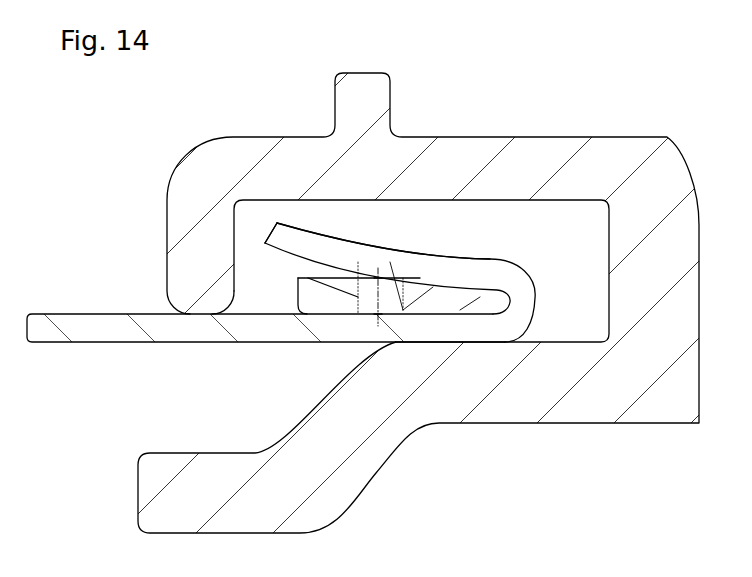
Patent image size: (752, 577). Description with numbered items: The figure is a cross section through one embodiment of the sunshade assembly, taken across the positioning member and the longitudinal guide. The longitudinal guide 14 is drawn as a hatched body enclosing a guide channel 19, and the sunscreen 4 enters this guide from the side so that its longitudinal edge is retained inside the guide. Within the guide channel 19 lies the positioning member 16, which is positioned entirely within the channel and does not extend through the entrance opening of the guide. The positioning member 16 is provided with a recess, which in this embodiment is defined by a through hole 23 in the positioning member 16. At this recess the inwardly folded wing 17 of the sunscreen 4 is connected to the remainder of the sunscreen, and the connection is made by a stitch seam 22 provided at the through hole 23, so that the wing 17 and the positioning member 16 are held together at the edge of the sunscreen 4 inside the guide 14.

The sunscreen 4 is at (85, 327).
The longitudinal guide 14 is at (529, 133).
The positioning member 16 is at (459, 289).
The inwardly folded wing 17 is at (310, 252).
The guide channel 19 is at (421, 271).
The stitch seam 22 is at (377, 301).
The through hole 23 is at (298, 285).